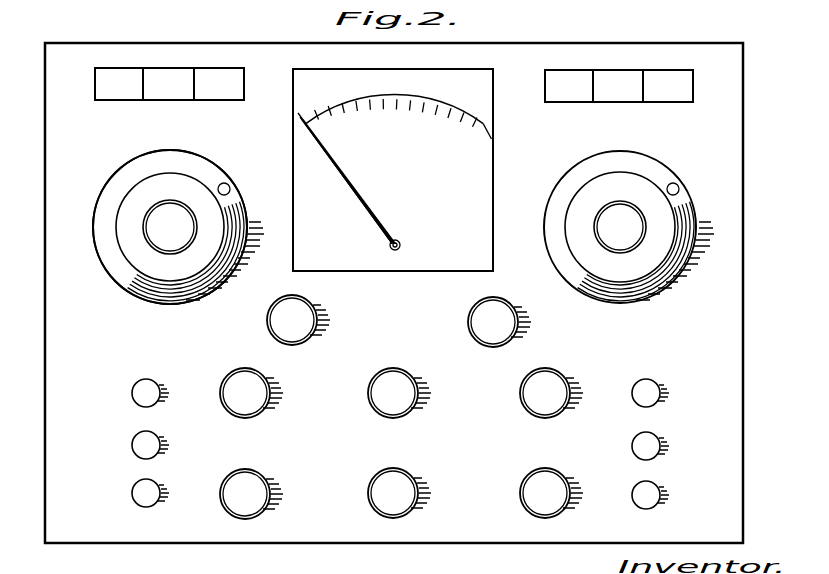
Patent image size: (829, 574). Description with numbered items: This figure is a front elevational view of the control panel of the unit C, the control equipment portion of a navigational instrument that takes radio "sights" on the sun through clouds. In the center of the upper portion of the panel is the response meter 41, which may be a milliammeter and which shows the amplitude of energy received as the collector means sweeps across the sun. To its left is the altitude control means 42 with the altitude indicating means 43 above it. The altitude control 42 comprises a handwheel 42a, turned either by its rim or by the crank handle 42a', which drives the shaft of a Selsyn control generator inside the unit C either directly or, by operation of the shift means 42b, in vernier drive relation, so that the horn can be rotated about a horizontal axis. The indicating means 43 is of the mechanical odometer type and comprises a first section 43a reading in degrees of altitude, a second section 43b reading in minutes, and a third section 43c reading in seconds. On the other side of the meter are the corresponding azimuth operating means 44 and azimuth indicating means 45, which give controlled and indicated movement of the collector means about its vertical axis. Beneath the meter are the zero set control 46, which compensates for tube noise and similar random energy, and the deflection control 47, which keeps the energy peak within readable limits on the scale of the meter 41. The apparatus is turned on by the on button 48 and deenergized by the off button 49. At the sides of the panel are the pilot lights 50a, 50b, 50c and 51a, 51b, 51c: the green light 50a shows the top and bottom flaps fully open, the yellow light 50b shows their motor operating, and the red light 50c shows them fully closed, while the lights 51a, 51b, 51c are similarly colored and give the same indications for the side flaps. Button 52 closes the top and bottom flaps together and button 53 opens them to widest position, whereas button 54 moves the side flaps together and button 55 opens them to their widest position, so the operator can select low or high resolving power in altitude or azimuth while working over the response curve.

The unit C is at (743, 275).
The response meter 41 is at (485, 156).
The altitude control means 42 is at (115, 165).
The handwheel 42a is at (150, 227).
The crank handle 42a' is at (240, 168).
The shift means 42b is at (168, 237).
The altitude indicating means 43 is at (185, 59).
The first section 43a is at (112, 102).
The second section 43b is at (165, 102).
The third section 43c is at (208, 102).
The azimuth operating means 44 is at (692, 185).
The azimuth indicating means 45 is at (623, 63).
The zero set control 46 is at (314, 311).
The deflection control 47 is at (484, 304).
The on button 48 is at (418, 408).
The off button 49 is at (418, 494).
The pilot light 50a is at (132, 393).
The pilot light 50b is at (132, 445).
The pilot light 50c is at (132, 495).
The pilot light 51a is at (658, 392).
The pilot light 51b is at (661, 446).
The pilot light 51c is at (661, 495).
The button 52 is at (270, 491).
The button 53 is at (270, 394).
The button 54 is at (565, 495).
The button 55 is at (567, 396).